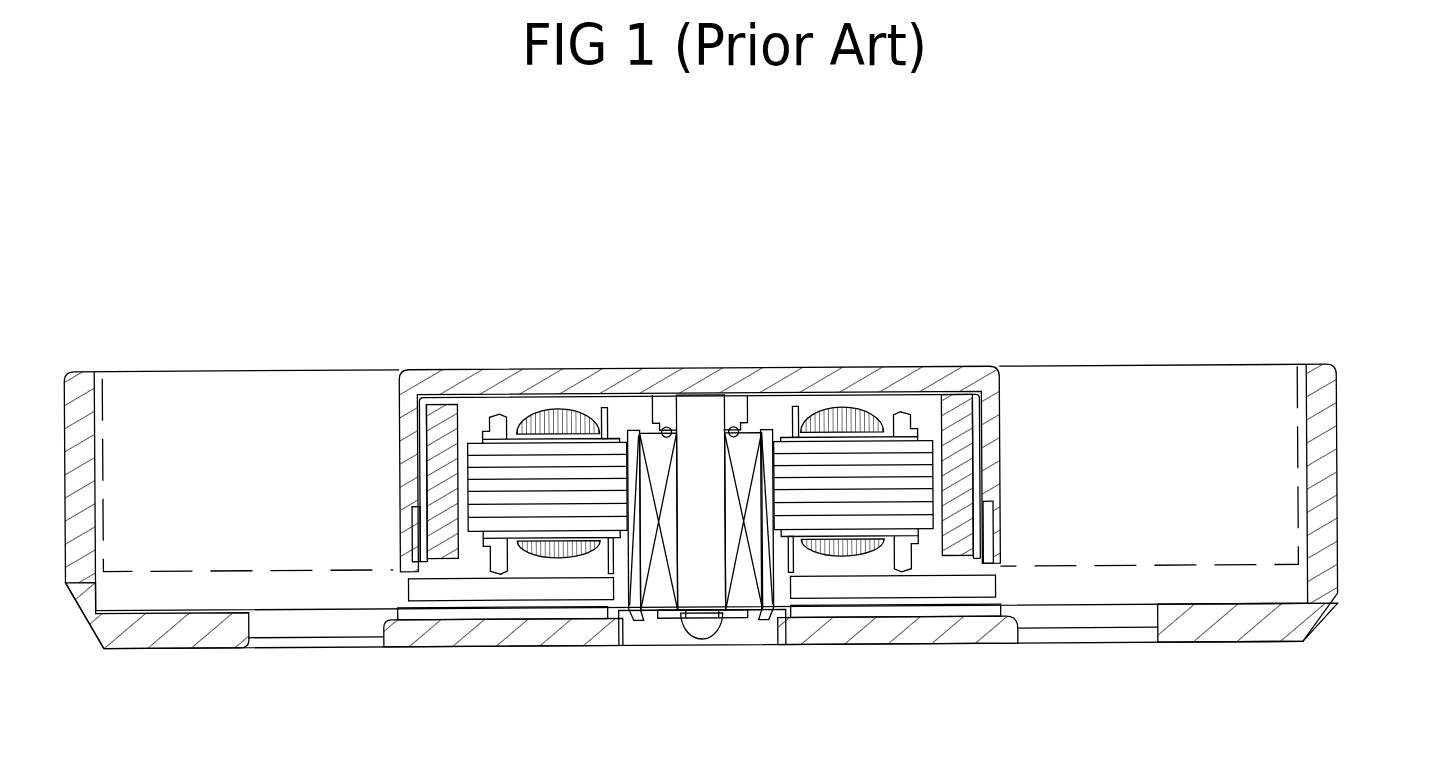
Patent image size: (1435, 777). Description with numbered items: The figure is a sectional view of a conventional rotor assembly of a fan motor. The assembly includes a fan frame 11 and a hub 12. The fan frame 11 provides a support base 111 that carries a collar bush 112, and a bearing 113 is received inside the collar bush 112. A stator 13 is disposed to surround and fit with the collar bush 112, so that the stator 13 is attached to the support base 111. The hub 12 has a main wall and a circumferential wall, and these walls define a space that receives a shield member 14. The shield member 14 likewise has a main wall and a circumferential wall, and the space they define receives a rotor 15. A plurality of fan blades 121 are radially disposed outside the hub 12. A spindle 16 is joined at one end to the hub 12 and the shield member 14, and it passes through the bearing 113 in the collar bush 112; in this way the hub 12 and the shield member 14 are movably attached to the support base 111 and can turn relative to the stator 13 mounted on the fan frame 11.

The fan frame 11 is at (1330, 490).
The support base 111 is at (900, 627).
The collar bush 112 is at (633, 430).
The bearing 113 is at (750, 460).
The hub 12 is at (532, 380).
The fan blades 121 is at (1198, 398).
The stator 13 is at (918, 455).
The shield member 14 is at (441, 400).
The rotor 15 is at (982, 455).
The spindle 16 is at (713, 438).